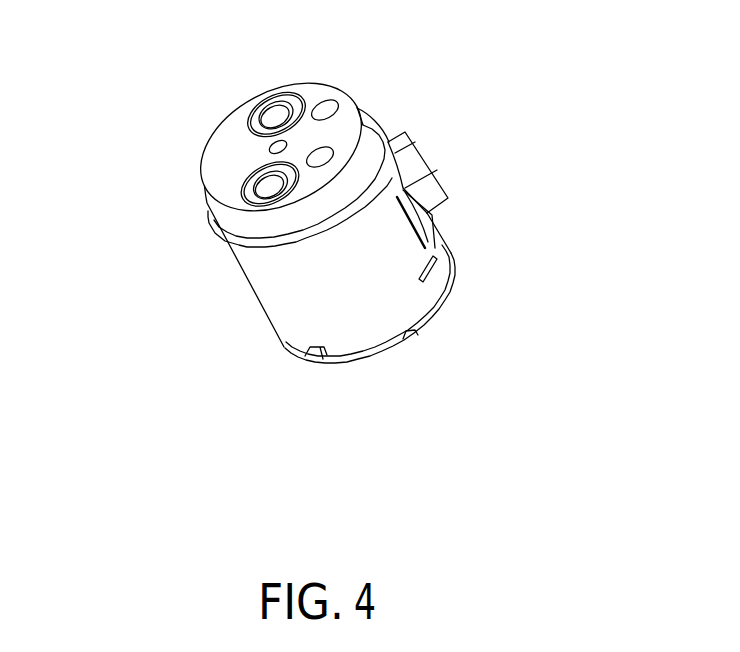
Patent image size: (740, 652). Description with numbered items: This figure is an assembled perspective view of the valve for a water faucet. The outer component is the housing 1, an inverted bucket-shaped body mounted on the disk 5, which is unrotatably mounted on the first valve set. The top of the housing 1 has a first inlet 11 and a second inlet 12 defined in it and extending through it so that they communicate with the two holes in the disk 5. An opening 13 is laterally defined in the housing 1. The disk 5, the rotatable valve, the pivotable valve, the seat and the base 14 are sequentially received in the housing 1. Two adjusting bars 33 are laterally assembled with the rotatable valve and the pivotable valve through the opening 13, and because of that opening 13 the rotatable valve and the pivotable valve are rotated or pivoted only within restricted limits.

The housing 1 is at (267, 312).
The first inlet 11 is at (277, 112).
The second inlet 12 is at (260, 185).
The opening 13 is at (428, 237).
The base 14 is at (445, 295).
The adjusting bars 33 is at (427, 155).
The disk 5 is at (192, 68).